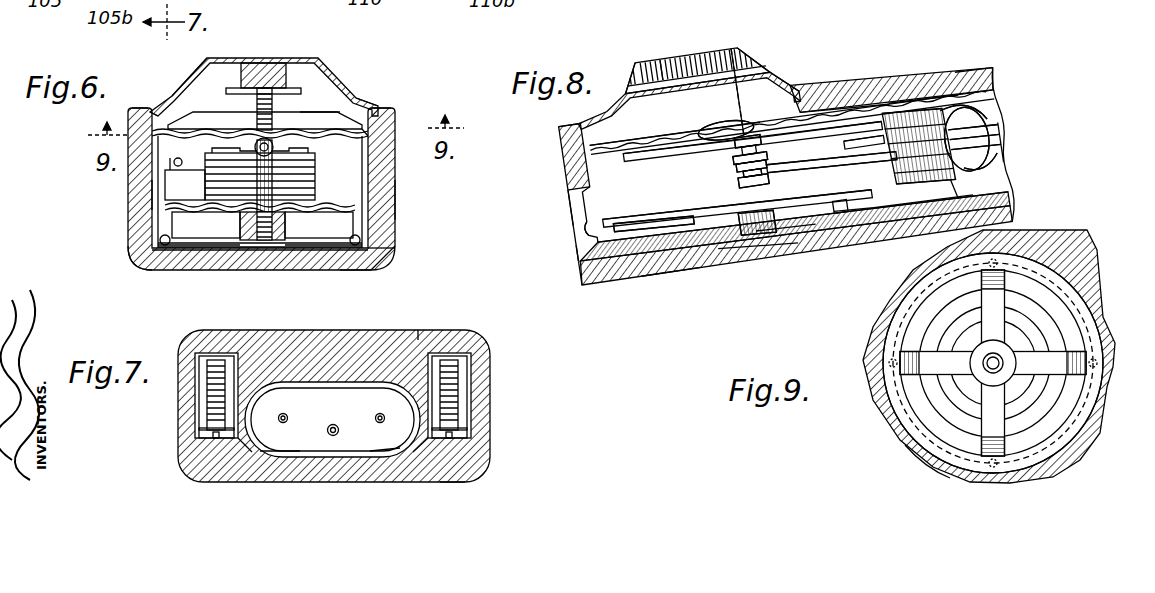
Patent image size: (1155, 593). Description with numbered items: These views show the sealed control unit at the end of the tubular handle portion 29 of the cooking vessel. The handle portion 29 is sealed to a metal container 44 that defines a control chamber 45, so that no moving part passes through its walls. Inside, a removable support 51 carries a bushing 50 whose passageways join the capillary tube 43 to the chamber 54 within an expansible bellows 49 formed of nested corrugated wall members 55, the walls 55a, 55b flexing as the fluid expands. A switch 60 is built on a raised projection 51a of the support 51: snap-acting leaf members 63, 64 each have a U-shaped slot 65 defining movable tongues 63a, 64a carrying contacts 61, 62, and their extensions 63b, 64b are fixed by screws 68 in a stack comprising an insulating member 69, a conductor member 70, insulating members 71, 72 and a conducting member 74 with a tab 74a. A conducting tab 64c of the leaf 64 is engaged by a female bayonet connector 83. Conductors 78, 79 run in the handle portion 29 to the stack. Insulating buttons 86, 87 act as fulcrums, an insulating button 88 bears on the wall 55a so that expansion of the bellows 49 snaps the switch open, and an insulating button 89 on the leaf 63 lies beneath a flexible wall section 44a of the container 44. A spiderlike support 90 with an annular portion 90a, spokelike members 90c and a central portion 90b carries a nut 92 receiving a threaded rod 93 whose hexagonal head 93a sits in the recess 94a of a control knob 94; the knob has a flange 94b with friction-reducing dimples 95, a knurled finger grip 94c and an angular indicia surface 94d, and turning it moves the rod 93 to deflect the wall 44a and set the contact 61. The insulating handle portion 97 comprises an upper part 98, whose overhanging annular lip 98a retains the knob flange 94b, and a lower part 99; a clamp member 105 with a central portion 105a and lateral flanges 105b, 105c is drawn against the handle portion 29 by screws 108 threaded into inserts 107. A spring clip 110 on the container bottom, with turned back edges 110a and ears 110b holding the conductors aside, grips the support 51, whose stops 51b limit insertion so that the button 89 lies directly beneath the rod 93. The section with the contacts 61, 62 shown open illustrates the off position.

In FIG. 7, the tubular handle portion 29 is at (390, 450).
In FIG. 8, the tubular handle portion 29 is at (570, 208).
In FIG. 7, the capillary tube 43 is at (334, 424).
In FIG. 8, the capillary tube 43 is at (585, 255).
In FIG. 6, the container 44 is at (375, 130).
In FIG. 8, the container 44 is at (870, 92).
In FIG. 6, the flexible wall section 44a is at (202, 118).
In FIG. 8, the flexible wall section 44a is at (652, 150).
In FIG. 6, the control chamber 45 is at (370, 142).
In FIG. 8, the control chamber 45 is at (566, 162).
In FIG. 6, the expansible bellows 49 is at (185, 185).
In FIG. 8, the expansible bellows 49 is at (642, 238).
In FIG. 6, the bushing 50 is at (266, 245).
In FIG. 8, the bushing 50 is at (706, 242).
In FIG. 6, the removable support 51 is at (205, 248).
In FIG. 8, the removable support 51 is at (802, 240).
In FIG. 6, the raised projection 51a is at (305, 248).
In FIG. 8, the raised projection 51a is at (882, 226).
In FIG. 6, the stops 51b is at (160, 230).
In FIG. 8, the chamber 54 is at (750, 190).
In FIG. 6, the center stud 55 is at (262, 176).
In FIG. 6, the flexible wall member 55a is at (318, 203).
In FIG. 8, the flexible wall member 55a is at (682, 206).
In FIG. 6, the flexible wall member 55b is at (262, 225).
In FIG. 6, the switch 60 is at (310, 150).
In FIG. 8, the switch 60 is at (812, 136).
In FIG. 8, the contact 61 is at (870, 140).
In FIG. 8, the contact 62 is at (900, 172).
In FIG. 8, the snap-acting leaf member 63 is at (748, 150).
In FIG. 8, the movable tongue 63a is at (850, 136).
In FIG. 8, the extension 63b is at (928, 120).
In FIG. 8, the snap-acting leaf member 64 is at (815, 170).
In FIG. 8, the movable tongue 64a is at (830, 165).
In FIG. 8, the extension 64b is at (966, 130).
In FIG. 8, the conducting tab 64c is at (962, 140).
In FIG. 6, the U-shaped slot 65 is at (315, 172).
In FIG. 8, the screws 68 is at (906, 110).
In FIG. 8, the insulating member 69 is at (950, 175).
In FIG. 8, the conductor member 70 is at (972, 165).
In FIG. 8, the insulating member 71 is at (982, 160).
In FIG. 8, the insulating member 72 is at (952, 115).
In FIG. 8, the conducting member 74 is at (962, 85).
In FIG. 6, the conducting tab 74a is at (180, 153).
In FIG. 6, the conductor 78 is at (152, 193).
In FIG. 7, the conductor 78 is at (380, 407).
In FIG. 8, the conductor 78 is at (936, 190).
In FIG. 6, the conductor 79 is at (385, 262).
In FIG. 7, the conductor 79 is at (287, 415).
In FIG. 8, the female bayonet connector 83 is at (990, 150).
In FIG. 8, the insulating button 86 is at (733, 162).
In FIG. 8, the insulating button 87 is at (765, 162).
In FIG. 8, the insulating button 88 is at (736, 182).
In FIG. 6, the insulating button 89 is at (262, 147).
In FIG. 8, the insulating button 89 is at (692, 146).
In FIG. 6, the spiderlike support 90 is at (212, 64).
In FIG. 8, the spiderlike support 90 is at (776, 100).
In FIG. 9, the spiderlike support 90 is at (902, 422).
In FIG. 6, the annular portion 90a is at (384, 108).
In FIG. 9, the annular portion 90a is at (893, 340).
In FIG. 6, the central portion 90b is at (300, 113).
In FIG. 9, the central portion 90b is at (1006, 338).
In FIG. 9, the spokelike members 90c is at (938, 352).
In FIG. 6, the nut 92 is at (300, 90).
In FIG. 9, the nut 92 is at (1006, 382).
In FIG. 6, the threaded rod 93 is at (275, 92).
In FIG. 8, the threaded rod 93 is at (728, 80).
In FIG. 9, the threaded rod 93 is at (990, 372).
In FIG. 6, the hexagonal head portion 93a is at (272, 90).
In FIG. 6, the control knob 94 is at (192, 82).
In FIG. 8, the control knob 94 is at (642, 70).
In FIG. 6, the recess 94a is at (262, 62).
In FIG. 6, the flange portion 94b is at (132, 118).
In FIG. 8, the flange portion 94b is at (796, 102).
In FIG. 9, the flange portion 94b is at (915, 455).
In FIG. 8, the finger grip portion 94c is at (690, 58).
In FIG. 8, the angular surface 94d is at (758, 72).
In FIG. 6, the dimples 95 is at (162, 110).
In FIG. 9, the dimples 95 is at (1100, 362).
In FIG. 6, the insulating handle portion 97 is at (398, 203).
In FIG. 7, the insulating handle portion 97 is at (520, 400).
In FIG. 8, the insulating handle portion 97 is at (659, 265).
In FIG. 6, the upper handle part 98 is at (392, 172).
In FIG. 7, the upper handle part 98 is at (462, 334).
In FIG. 9, the upper handle part 98 is at (1076, 236).
In FIG. 6, the overhanging annular lip 98a is at (382, 106).
In FIG. 6, the lower handle part 99 is at (396, 252).
In FIG. 7, the lower handle part 99 is at (466, 478).
In FIG. 8, the lower handle part 99 is at (590, 282).
In FIG. 7, the clamp member 105 is at (255, 452).
In FIG. 7, the central portion 105a is at (300, 452).
In FIG. 7, the lateral flange 105b is at (196, 432).
In FIG. 7, the lateral flange 105c is at (470, 432).
In FIG. 7, the threaded inserts 107 is at (196, 380).
In FIG. 7, the screws 108 is at (196, 410).
In FIG. 6, the spring clip 110 is at (243, 262).
In FIG. 8, the spring clip 110 is at (736, 255).
In FIG. 6, the turned back edges 110a is at (163, 250).
In FIG. 8, the turned back edges 110a is at (832, 236).
In FIG. 6, the ears 110b is at (142, 262).
In FIG. 8, the ears 110b is at (771, 246).